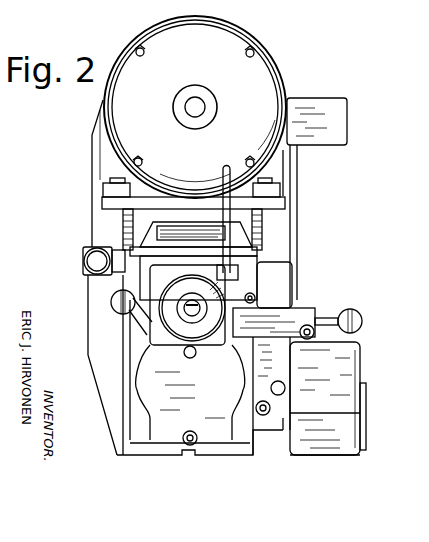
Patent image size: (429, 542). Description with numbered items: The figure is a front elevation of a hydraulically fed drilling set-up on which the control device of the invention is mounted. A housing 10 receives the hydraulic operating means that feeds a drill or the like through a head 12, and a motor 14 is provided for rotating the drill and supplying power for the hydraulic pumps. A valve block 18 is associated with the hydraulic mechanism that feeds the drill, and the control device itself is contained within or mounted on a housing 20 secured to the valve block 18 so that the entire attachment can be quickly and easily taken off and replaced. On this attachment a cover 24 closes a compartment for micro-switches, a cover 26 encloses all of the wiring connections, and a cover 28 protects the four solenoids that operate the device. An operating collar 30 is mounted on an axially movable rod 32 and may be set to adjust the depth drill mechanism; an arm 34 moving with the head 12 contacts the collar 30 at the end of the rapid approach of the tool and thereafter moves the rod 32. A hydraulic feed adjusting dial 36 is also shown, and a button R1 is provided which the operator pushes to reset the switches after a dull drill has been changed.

The housing 10 is at (150, 420).
The head 12 is at (190, 312).
The motor 14 is at (248, 45).
The valve block 18 is at (262, 370).
The housing 20 is at (350, 372).
The cover 24 is at (313, 410).
The cover 26 is at (366, 403).
The cover 28 is at (325, 455).
The operating collar 30 is at (308, 340).
The axially movable rod 32 is at (315, 332).
The arm 34 is at (315, 310).
The hydraulic feed adjusting dial 36 is at (286, 388).
The reset button R1 is at (280, 420).